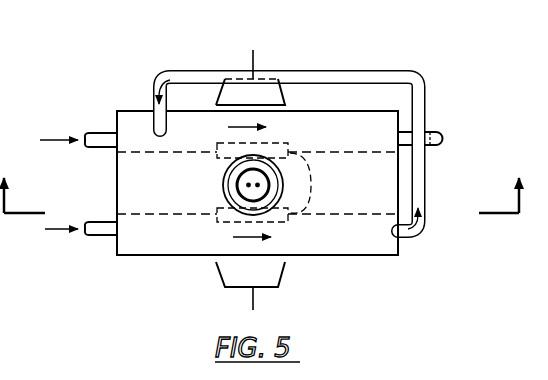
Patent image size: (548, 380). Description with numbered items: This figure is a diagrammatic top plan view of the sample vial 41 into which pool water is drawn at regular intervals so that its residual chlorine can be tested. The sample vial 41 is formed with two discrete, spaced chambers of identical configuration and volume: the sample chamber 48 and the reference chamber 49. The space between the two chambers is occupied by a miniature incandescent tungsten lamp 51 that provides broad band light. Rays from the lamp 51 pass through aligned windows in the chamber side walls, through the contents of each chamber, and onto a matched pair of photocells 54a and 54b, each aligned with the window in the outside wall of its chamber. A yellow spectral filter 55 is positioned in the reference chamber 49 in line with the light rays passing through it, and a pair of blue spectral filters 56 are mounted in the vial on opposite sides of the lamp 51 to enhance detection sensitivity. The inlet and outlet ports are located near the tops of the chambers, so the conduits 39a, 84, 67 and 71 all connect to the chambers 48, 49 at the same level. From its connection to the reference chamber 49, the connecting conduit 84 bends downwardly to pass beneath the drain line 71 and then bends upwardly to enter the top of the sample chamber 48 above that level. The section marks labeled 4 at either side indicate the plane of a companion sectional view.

The sample vial 41 is at (166, 266).
The sample chamber 48 is at (356, 143).
The reference chamber 49 is at (356, 246).
The conduit 67 is at (98, 132).
The conduit 39a is at (110, 236).
The drain line 71 is at (441, 134).
The connecting conduit 84 is at (421, 178).
The photocell 54a is at (283, 94).
The photocell 54b is at (287, 276).
The incandescent lamp 51 is at (223, 188).
The blue spectral filters 56 is at (311, 180).
The yellow spectral filter 55 is at (217, 227).
The section line 4- 4 is at (260, 181).